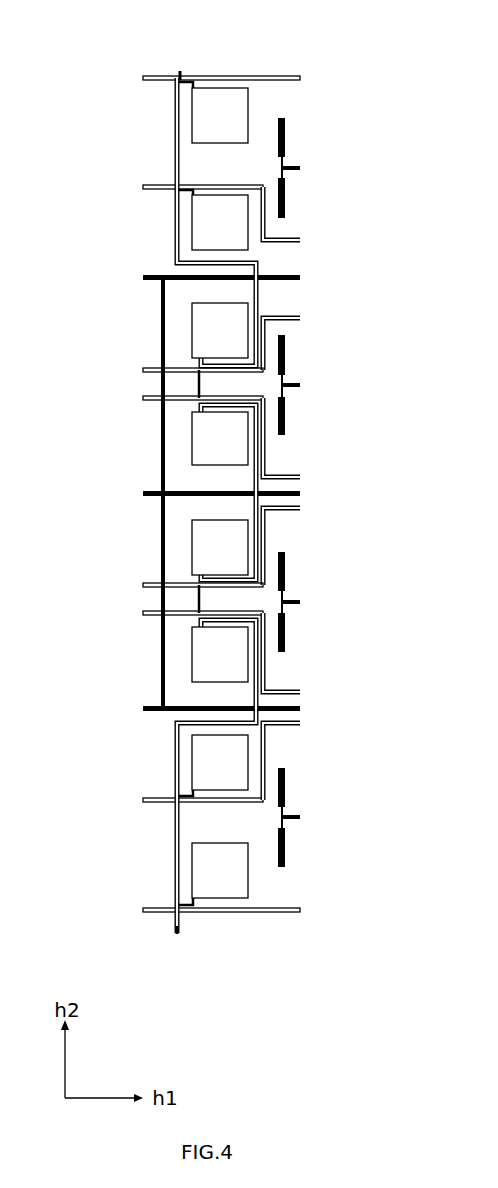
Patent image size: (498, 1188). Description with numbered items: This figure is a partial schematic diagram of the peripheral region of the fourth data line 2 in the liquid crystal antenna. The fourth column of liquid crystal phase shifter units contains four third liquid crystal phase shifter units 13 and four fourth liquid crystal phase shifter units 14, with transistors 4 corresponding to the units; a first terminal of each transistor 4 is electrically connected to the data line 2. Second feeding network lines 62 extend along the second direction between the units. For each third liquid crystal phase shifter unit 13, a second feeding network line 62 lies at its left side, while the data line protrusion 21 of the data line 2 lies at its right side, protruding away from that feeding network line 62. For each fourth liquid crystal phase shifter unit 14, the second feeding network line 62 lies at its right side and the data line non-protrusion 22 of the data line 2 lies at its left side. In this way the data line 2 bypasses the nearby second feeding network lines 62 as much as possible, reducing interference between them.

The transistor 4 is at (180, 71).
The data line non-protrusion 22 is at (177, 152).
The second feeding network line 62 is at (287, 133).
The data line protrusion 21 is at (263, 442).
The data line 2 is at (177, 934).
The third liquid crystal phase shifter unit 13 is at (220, 492).
The fourth liquid crystal phase shifter unit 14 is at (220, 493).